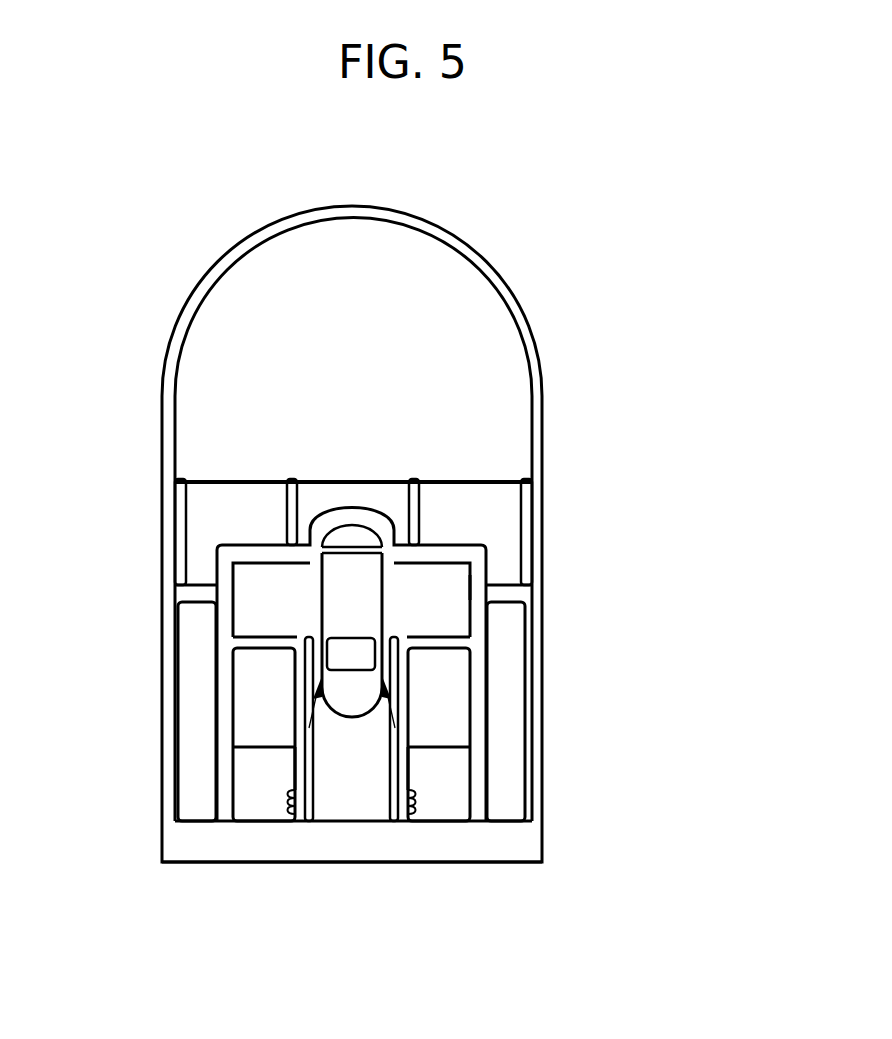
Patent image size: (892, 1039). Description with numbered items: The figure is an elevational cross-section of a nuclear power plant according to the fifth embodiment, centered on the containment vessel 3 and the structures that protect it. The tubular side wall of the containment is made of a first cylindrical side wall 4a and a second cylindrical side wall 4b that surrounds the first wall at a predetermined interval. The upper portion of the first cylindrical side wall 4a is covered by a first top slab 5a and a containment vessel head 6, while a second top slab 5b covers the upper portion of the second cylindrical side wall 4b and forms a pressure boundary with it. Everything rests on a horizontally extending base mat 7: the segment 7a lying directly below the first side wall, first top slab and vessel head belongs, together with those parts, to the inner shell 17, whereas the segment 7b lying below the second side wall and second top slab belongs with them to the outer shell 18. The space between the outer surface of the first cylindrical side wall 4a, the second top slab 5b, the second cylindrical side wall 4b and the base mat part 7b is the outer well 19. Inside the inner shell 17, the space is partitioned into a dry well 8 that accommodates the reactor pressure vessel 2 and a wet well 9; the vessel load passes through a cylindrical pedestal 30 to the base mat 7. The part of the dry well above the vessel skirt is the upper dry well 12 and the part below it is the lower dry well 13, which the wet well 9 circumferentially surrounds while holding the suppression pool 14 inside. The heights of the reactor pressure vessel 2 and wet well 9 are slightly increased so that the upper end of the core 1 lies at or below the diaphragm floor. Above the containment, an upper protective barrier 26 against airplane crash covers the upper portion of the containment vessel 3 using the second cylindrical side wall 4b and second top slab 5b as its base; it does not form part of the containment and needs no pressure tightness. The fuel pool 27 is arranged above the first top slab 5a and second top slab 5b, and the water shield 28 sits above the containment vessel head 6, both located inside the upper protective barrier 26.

The core 1 is at (345, 648).
The reactor pressure vessel 2 is at (337, 607).
The containment vessel 3 is at (210, 542).
The first cylindrical side wall 4a is at (223, 712).
The second cylindrical side wall 4b is at (533, 787).
The first top slab 5a is at (215, 495).
The second top slab 5b is at (207, 592).
The containment vessel head 6 is at (373, 510).
The base mat 7 is at (505, 883).
The segment of base mat 7a is at (393, 848).
The segment of base mat 7b is at (200, 853).
The dry well 8 is at (457, 588).
The wet well 9 is at (450, 710).
The upper dry well 12 is at (452, 617).
The lower dry well 13 is at (337, 800).
The suppression pool 14 is at (248, 777).
The inner shell 17 is at (493, 553).
The outer shell 18 is at (555, 625).
The outer well 19 is at (190, 707).
The upper protective barrier 26 is at (197, 295).
The fuel pool 27 is at (248, 545).
The water shield 28 is at (342, 492).
The cylindrical pedestal 30 is at (390, 713).